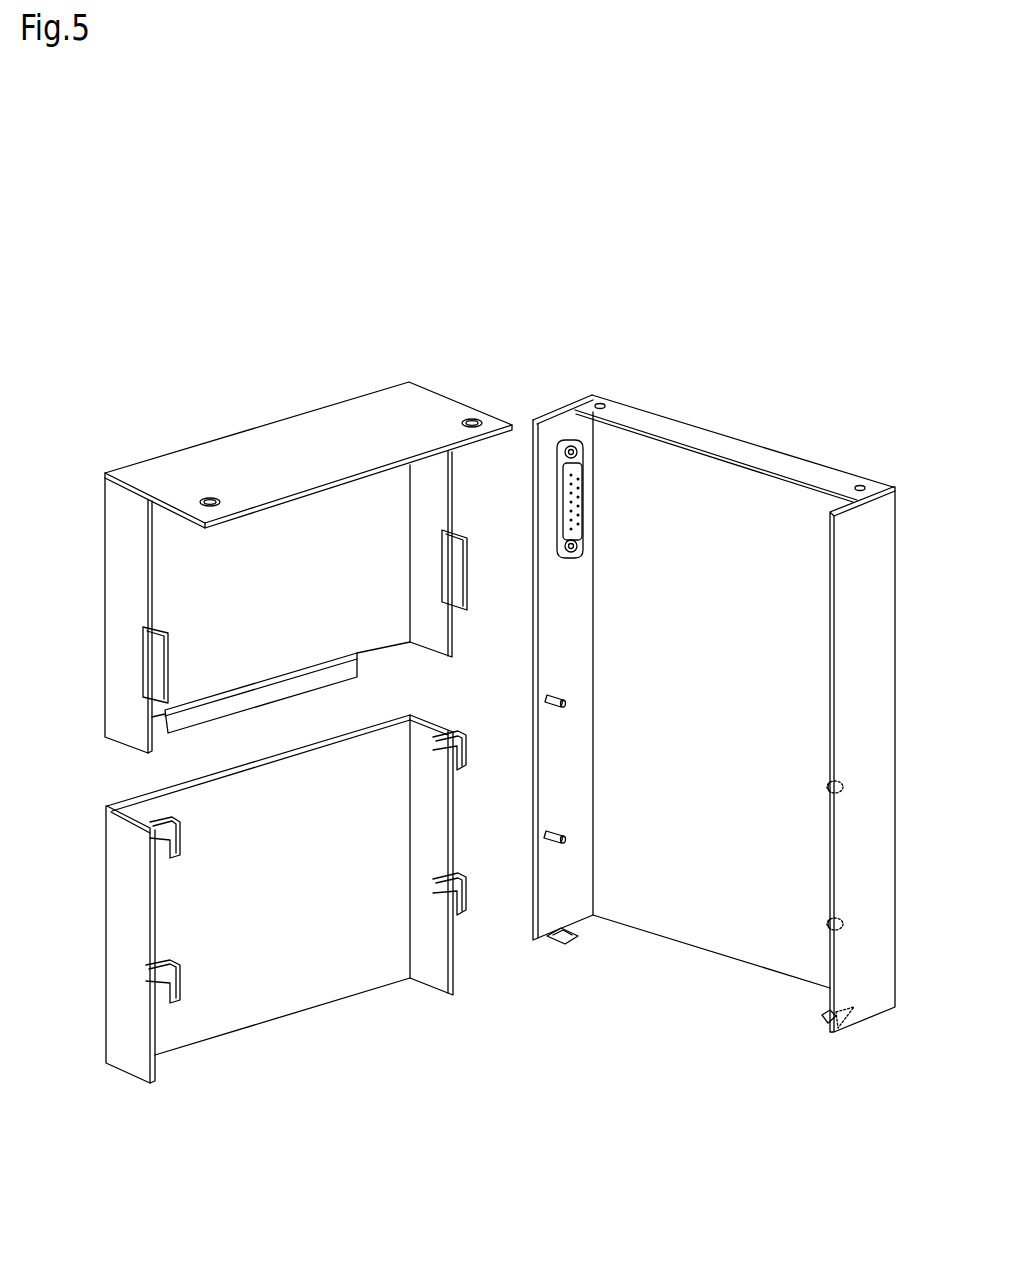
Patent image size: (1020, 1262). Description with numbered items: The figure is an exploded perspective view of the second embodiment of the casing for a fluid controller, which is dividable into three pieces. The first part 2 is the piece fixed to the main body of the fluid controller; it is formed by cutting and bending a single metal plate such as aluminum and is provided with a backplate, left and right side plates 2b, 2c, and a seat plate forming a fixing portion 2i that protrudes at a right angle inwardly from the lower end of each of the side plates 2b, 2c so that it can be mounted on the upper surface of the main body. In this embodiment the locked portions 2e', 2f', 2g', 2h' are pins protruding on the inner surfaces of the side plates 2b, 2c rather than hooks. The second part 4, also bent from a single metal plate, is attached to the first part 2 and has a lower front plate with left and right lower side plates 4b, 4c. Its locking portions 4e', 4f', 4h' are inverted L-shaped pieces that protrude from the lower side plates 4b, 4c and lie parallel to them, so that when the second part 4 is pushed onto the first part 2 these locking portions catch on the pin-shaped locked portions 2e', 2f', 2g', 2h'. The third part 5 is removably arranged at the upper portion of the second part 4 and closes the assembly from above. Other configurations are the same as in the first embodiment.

The third part 5 is at (267, 408).
The first part 2 is at (680, 719).
The second part 4 is at (300, 944).
The left lower side plate 4b is at (127, 1047).
The right lower side plate 4c is at (423, 963).
The locking portion 4f' is at (201, 840).
The locking portion 4h' is at (210, 982).
The locking portion 4e' is at (473, 865).
The locked portion 2e' is at (515, 715).
The locked portion 2g' is at (525, 867).
The right side plate 2c is at (565, 902).
The fixing portion 2i is at (555, 948).
The left side plate 2b is at (848, 987).
The locked portion 2f' is at (795, 750).
The locked portion 2h' is at (793, 902).